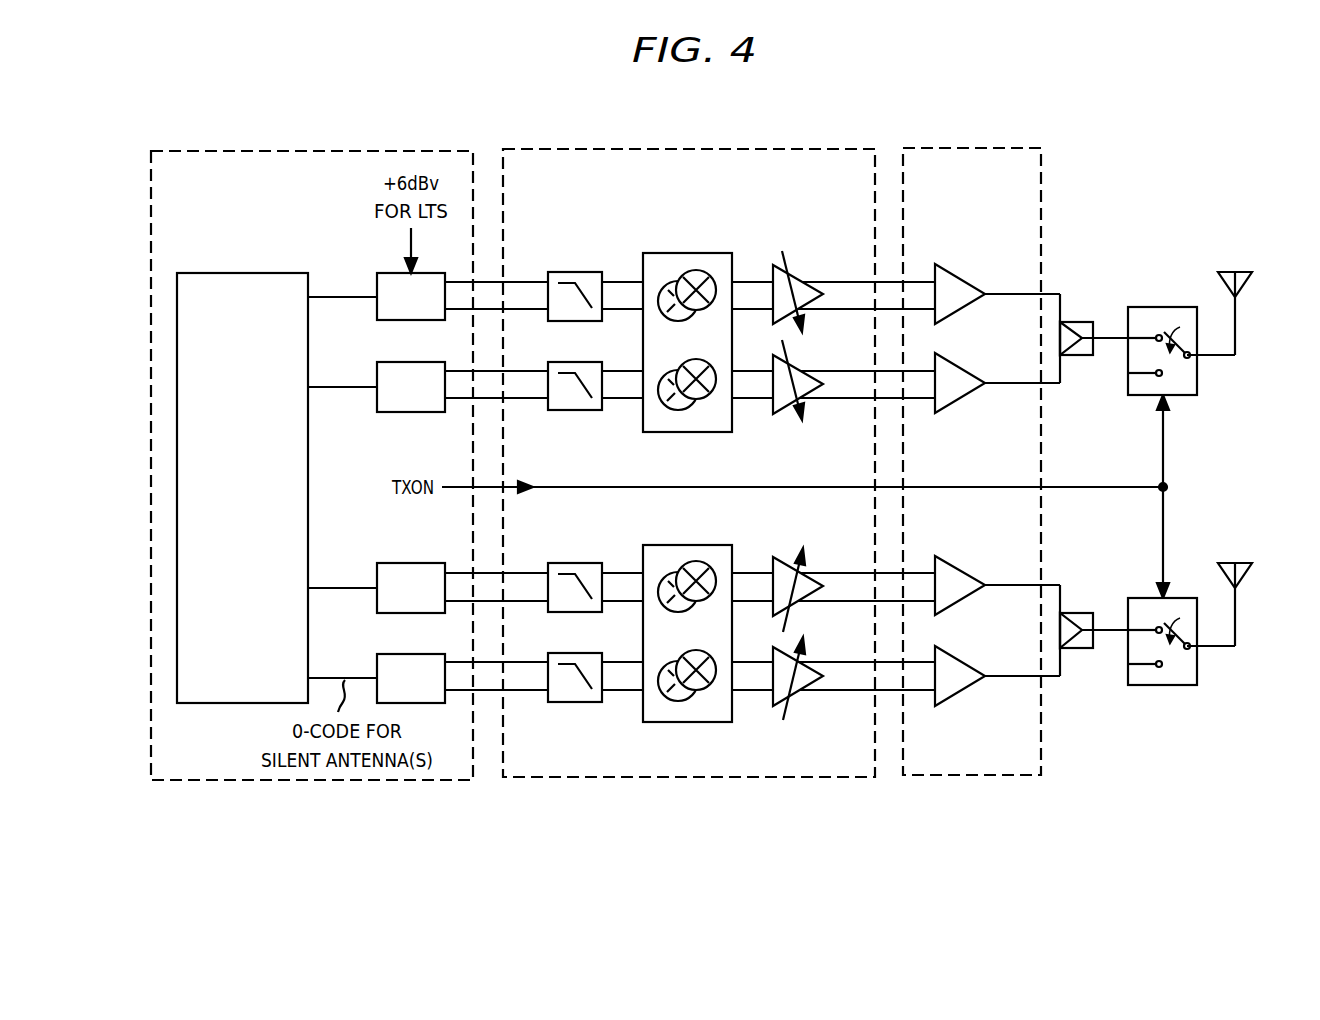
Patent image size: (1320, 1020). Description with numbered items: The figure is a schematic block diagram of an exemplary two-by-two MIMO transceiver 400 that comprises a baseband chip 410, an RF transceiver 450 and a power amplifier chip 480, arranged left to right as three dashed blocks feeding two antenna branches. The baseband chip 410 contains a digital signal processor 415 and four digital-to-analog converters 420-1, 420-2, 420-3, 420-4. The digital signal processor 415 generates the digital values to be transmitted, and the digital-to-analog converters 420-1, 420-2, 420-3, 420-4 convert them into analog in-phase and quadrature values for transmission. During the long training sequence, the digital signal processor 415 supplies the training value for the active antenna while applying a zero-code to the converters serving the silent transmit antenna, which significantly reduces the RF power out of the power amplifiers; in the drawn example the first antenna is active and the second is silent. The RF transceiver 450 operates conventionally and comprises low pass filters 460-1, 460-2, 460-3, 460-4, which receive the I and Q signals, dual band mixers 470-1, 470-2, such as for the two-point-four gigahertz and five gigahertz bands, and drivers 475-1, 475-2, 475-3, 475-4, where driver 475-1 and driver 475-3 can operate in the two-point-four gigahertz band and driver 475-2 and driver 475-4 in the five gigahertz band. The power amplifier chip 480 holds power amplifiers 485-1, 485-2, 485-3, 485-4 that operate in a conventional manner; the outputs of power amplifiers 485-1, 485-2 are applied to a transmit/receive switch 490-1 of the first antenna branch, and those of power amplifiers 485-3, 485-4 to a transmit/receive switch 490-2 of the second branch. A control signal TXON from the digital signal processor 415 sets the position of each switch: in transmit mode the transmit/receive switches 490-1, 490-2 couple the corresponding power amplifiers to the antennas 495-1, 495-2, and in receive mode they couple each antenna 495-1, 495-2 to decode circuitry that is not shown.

The MIMO transceiver 400 is at (1162, 132).
The baseband chip 410 is at (340, 151).
The digital signal processor 415 is at (221, 273).
The digital-to-analog converter 420-1 is at (392, 273).
The digital-to-analog converter 420-2 is at (395, 362).
The digital-to-analog converter 420-3 is at (392, 563).
The digital-to-analog converter 420-4 is at (395, 654).
The RF transceiver 450 is at (740, 149).
The low pass filter 460-1 is at (580, 272).
The low pass filter 460-2 is at (581, 362).
The low pass filter 460-3 is at (580, 563).
The low pass filter 460-4 is at (581, 653).
The mixer 470-1 is at (664, 253).
The mixer 470-2 is at (664, 545).
The driver 475-1 is at (794, 270).
The driver 475-2 is at (794, 360).
The driver 475-3 is at (781, 552).
The driver 475-4 is at (793, 697).
The power amplifier chip 480 is at (960, 148).
The power amplifier 485-1 is at (958, 274).
The power amplifier 485-2 is at (958, 367).
The power amplifier 485-3 is at (958, 567).
The power amplifier 485-4 is at (958, 659).
The transmit/receive switch 490-1 is at (1175, 307).
The transmit/receive switch 490-2 is at (1173, 685).
The antenna 495-1 is at (1244, 270).
The antenna 495-2 is at (1244, 562).